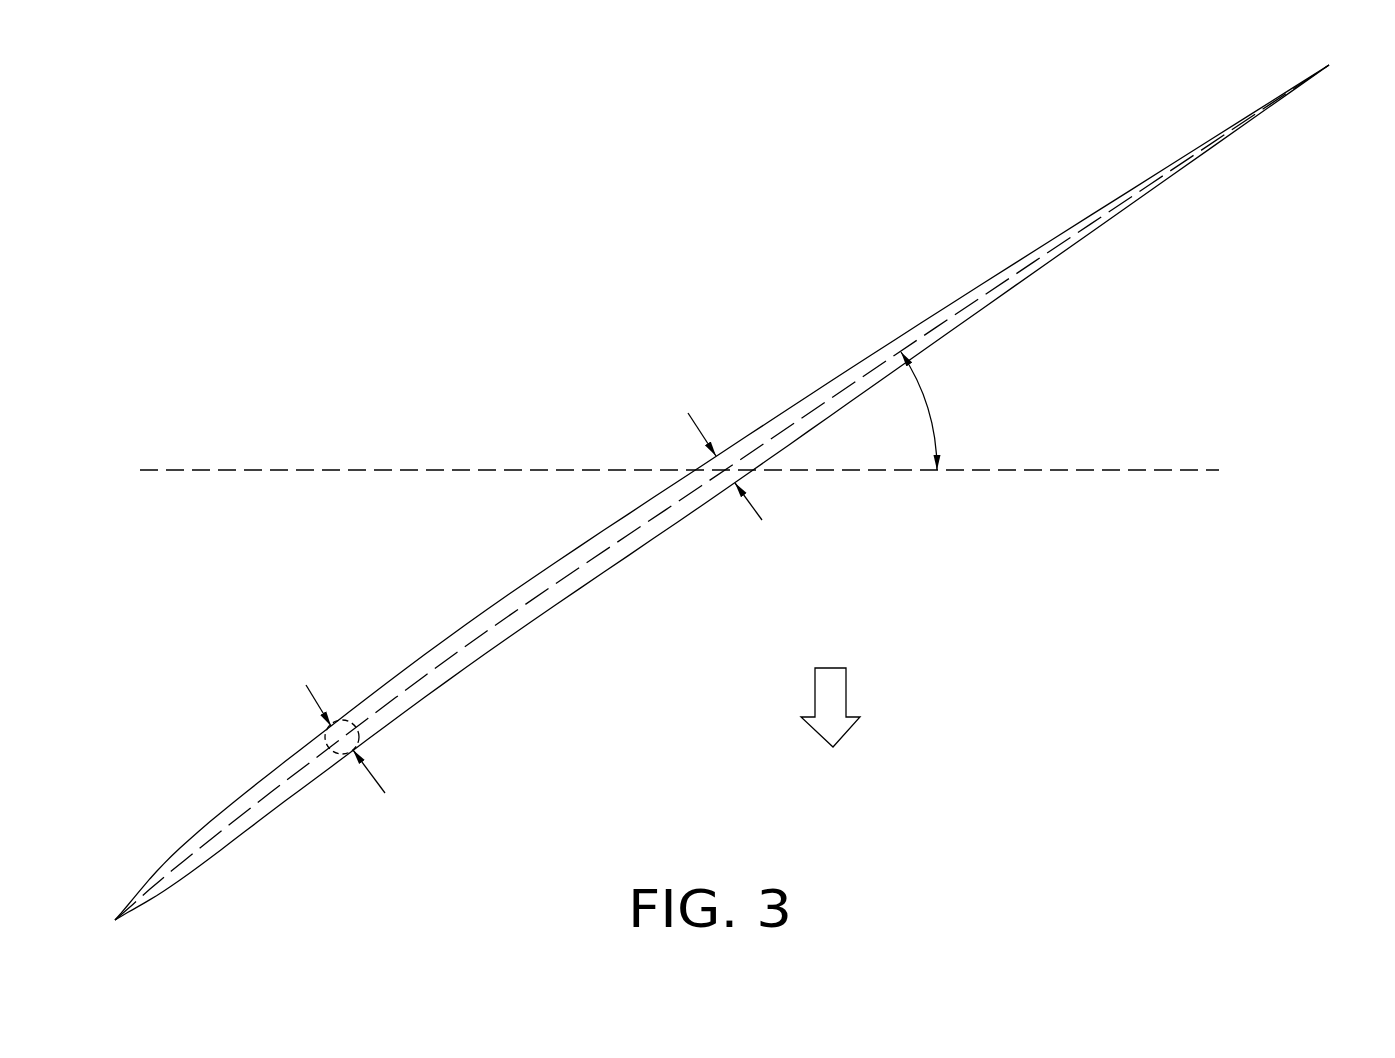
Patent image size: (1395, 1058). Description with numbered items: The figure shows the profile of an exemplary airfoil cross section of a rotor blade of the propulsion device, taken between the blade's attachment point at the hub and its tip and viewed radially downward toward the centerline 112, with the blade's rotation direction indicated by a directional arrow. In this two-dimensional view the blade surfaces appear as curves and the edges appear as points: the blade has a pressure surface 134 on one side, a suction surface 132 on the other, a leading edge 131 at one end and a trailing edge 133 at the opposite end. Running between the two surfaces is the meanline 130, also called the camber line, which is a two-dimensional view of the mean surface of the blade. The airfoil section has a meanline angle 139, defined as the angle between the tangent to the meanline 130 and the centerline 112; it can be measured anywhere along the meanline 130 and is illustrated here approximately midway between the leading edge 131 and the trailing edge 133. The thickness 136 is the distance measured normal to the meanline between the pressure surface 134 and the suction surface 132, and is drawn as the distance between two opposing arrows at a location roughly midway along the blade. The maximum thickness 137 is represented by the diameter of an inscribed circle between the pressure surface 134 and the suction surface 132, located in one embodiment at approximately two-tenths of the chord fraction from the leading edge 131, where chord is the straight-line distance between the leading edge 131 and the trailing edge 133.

The centerline 112 is at (1118, 468).
The meanline 130 is at (722, 492).
The leading edge 131 is at (100, 907).
The suction surface 132 is at (489, 609).
The trailing edge 133 is at (1345, 75).
The pressure surface 134 is at (481, 657).
The thickness 136 is at (703, 437).
The maximum thickness 137 is at (309, 690).
The meanline angle 139 is at (929, 412).